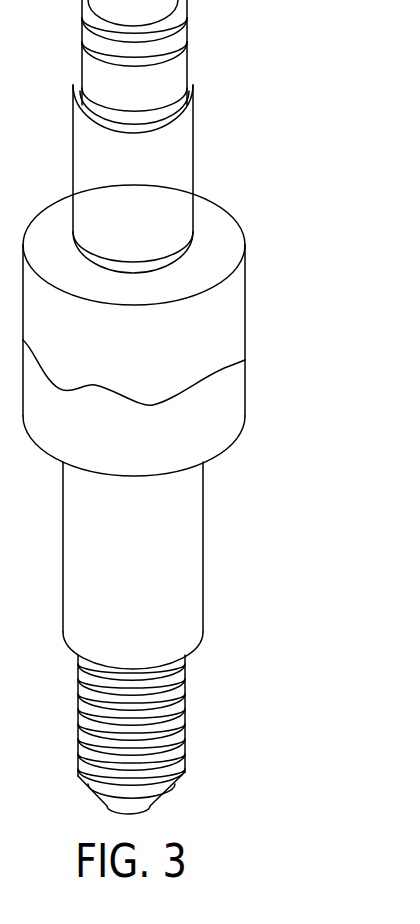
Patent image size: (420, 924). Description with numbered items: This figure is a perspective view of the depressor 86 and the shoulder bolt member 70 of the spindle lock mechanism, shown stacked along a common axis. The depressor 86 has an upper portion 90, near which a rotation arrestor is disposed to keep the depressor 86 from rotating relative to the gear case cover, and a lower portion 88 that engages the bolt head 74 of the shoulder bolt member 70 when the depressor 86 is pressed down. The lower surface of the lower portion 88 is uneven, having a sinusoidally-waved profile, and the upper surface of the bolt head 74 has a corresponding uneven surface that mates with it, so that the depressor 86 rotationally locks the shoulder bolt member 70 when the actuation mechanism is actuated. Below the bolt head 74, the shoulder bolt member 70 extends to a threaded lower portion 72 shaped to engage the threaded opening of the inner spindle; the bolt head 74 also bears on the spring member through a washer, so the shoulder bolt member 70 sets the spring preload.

The upper portion 90 is at (172, 38).
The depressor 86 is at (268, 173).
The lower portion 88 is at (222, 328).
The bolt head 74 is at (222, 408).
The shoulder bolt member 70 is at (248, 535).
The lower portion 72 is at (170, 730).